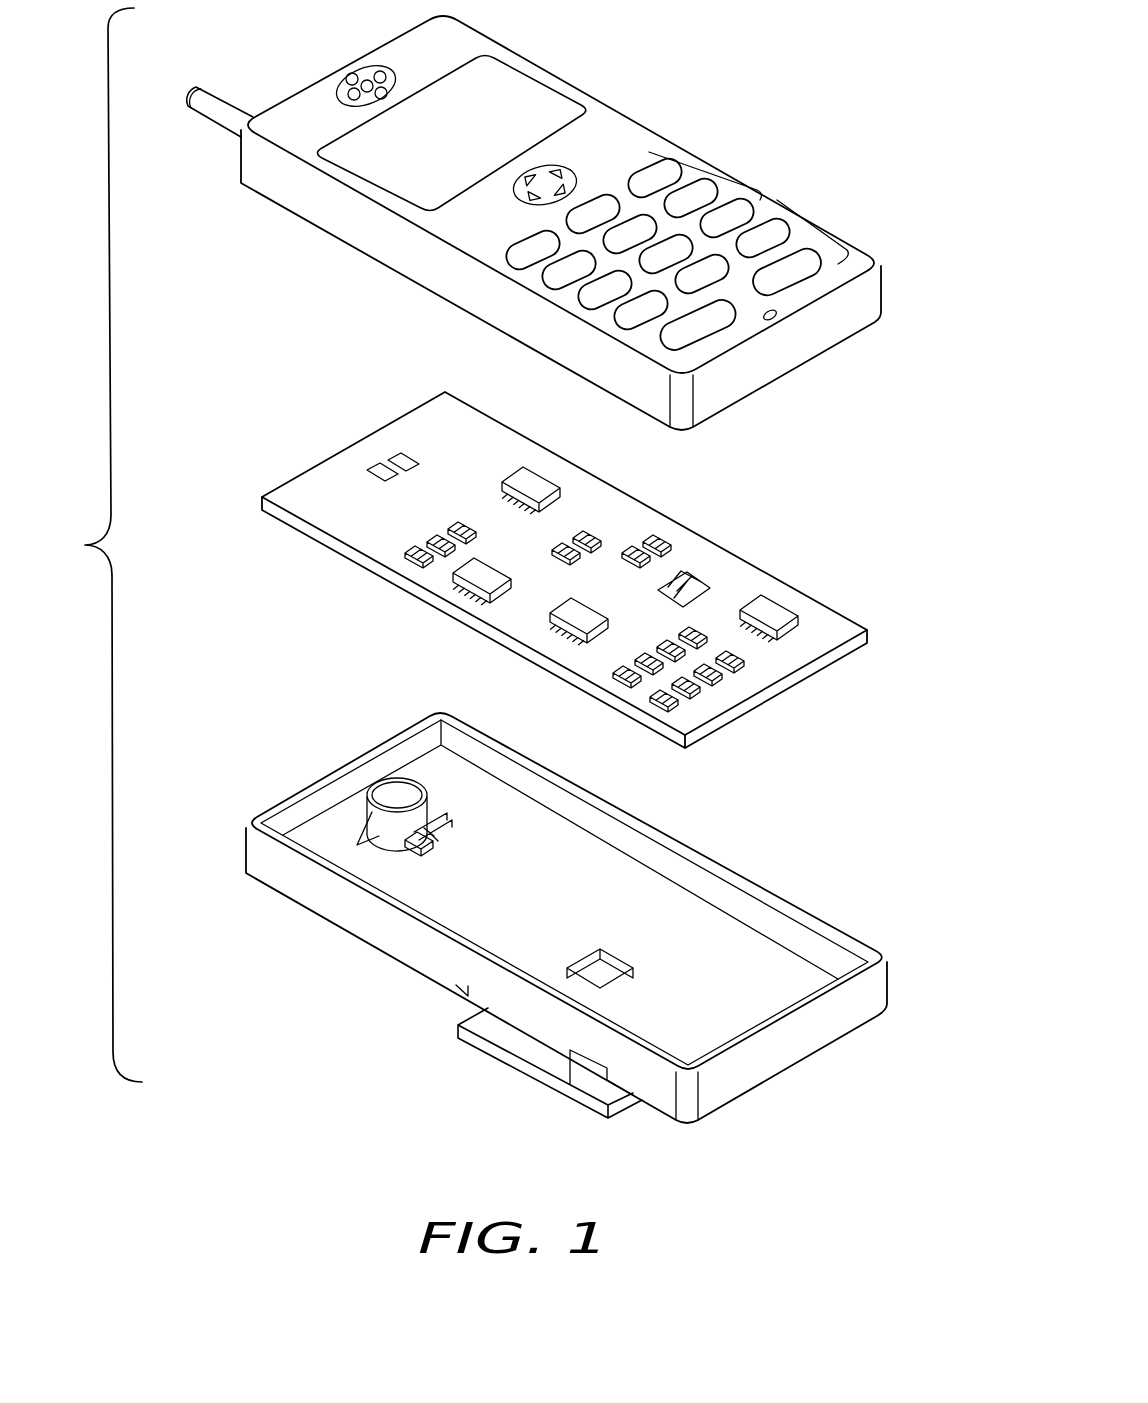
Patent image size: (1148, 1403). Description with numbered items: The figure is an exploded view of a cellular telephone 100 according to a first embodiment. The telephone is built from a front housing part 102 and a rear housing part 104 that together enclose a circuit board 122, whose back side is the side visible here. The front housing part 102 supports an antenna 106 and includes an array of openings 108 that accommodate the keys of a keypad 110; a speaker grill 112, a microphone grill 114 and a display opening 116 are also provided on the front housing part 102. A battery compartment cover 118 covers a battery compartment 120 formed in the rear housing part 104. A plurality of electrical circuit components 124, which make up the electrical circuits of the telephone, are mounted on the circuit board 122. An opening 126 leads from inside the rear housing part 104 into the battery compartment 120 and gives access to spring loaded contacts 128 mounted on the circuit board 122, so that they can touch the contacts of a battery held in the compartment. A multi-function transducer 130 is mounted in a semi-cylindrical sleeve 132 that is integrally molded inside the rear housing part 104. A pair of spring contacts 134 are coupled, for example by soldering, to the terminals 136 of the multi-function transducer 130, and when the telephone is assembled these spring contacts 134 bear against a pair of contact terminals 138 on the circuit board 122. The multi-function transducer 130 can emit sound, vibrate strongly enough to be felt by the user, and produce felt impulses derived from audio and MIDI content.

The cellular telephone 100 is at (486, 564).
The front housing part 102 is at (561, 215).
The rear housing part 104 is at (566, 901).
The antenna 106 is at (189, 100).
The array of openings 108 is at (675, 269).
The keypad 110 is at (572, 328).
The speaker grill 112 is at (338, 78).
The microphone grill 114 is at (804, 354).
The display opening 116 is at (461, 123).
The battery compartment cover 118 is at (546, 1063).
The battery compartment 120 is at (569, 1089).
The circuit board 122 is at (564, 570).
The electrical circuit components 124 is at (601, 608).
The opening 126 is at (617, 951).
The spring loaded contacts 128 is at (704, 557).
The multi-function transducer 130 is at (375, 788).
The semi-cylindrical sleeve 132 is at (335, 796).
The spring contacts 134 is at (454, 813).
The terminals 136 is at (397, 857).
The contact terminals 138 is at (370, 436).